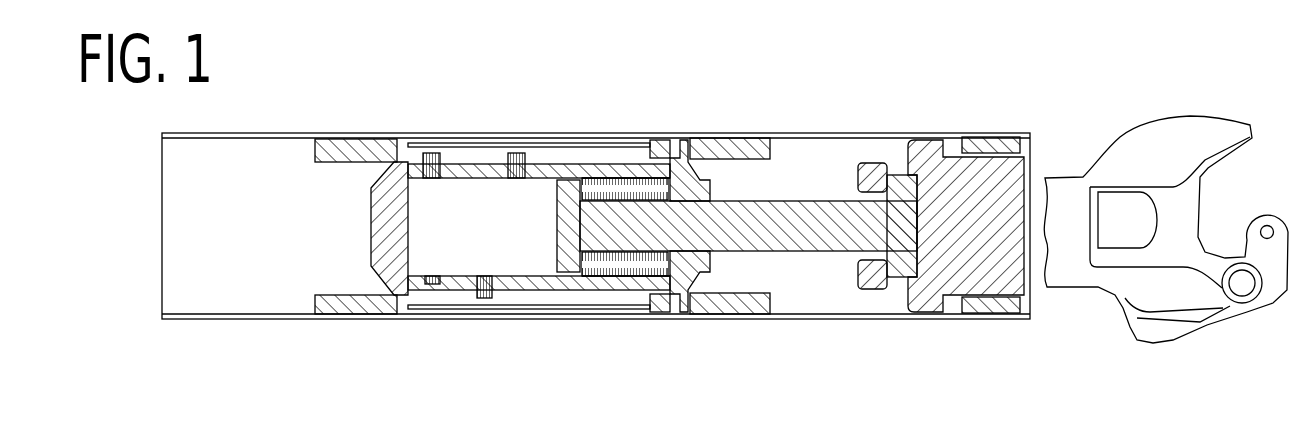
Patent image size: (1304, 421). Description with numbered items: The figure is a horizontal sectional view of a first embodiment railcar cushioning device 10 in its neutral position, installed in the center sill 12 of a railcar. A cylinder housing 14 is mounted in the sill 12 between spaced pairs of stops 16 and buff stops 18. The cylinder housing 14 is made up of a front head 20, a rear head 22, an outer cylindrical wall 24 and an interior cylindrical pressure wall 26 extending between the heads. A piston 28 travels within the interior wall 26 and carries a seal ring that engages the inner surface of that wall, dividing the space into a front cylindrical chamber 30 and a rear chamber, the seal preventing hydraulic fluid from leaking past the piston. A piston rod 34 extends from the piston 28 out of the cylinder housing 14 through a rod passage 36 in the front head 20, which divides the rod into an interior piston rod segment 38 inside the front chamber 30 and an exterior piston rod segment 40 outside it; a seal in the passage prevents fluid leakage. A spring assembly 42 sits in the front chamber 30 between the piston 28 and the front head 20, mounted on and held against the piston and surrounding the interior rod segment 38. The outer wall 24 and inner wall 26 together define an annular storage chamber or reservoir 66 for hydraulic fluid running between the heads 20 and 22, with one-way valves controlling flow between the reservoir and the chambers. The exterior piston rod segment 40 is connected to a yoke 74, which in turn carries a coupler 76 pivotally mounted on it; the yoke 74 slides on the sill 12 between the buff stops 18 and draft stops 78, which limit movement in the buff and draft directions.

The railcar cushioning device 10 is at (398, 83).
The center sill 12 is at (252, 132).
The cylinder housing 14 is at (554, 128).
The stops 16 is at (312, 150).
The buff stops 18 is at (772, 150).
The front head 20 is at (690, 185).
The rear head 22 is at (368, 212).
The outer cylindrical wall 24 is at (655, 150).
The interior cylindrical pressure wall 26 is at (455, 305).
The piston 28 is at (557, 235).
The front cylindrical chamber 30 is at (647, 278).
The piston rod 34 is at (830, 250).
The rod passage 36 is at (713, 252).
The interior piston rod segment 38 is at (606, 205).
The exterior piston rod segment 40 is at (815, 203).
The spring assembly 42 is at (620, 296).
The annular storage chamber 66 is at (472, 155).
The yoke 74 is at (1027, 283).
The coupler 76 is at (1152, 343).
The draft stops 78 is at (955, 140).